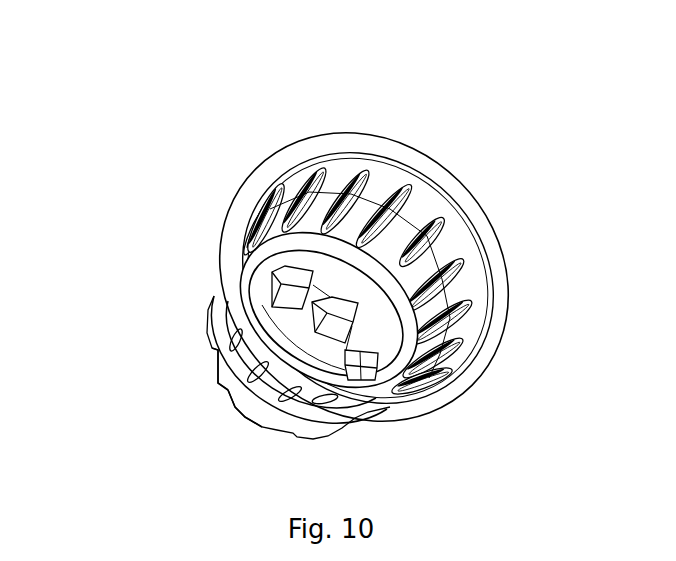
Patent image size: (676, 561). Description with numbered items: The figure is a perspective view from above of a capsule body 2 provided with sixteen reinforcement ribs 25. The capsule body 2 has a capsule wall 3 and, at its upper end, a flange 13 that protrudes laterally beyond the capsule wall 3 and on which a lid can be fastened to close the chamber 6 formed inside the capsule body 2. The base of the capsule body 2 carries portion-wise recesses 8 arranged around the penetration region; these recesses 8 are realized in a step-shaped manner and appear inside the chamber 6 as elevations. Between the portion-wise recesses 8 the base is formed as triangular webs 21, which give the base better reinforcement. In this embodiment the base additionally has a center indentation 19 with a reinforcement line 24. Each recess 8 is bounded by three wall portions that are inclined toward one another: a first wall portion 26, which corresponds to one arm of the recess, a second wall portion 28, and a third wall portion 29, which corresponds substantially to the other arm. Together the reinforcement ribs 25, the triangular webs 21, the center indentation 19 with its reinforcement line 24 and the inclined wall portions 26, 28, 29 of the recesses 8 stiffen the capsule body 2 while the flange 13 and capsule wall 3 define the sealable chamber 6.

The capsule body 2 is at (342, 70).
The capsule wall 3 is at (229, 406).
The chamber 6 is at (404, 261).
The portion-wise recesses 8 is at (395, 319).
The flange 13 is at (257, 162).
The center indentation 19 is at (237, 373).
The triangular webs 21 is at (407, 357).
The reinforcement line 24 is at (253, 403).
The reinforcement ribs 25 is at (247, 215).
The first wall portion 26 is at (340, 352).
The second wall portion 28 is at (272, 284).
The third wall portion 29 is at (300, 270).